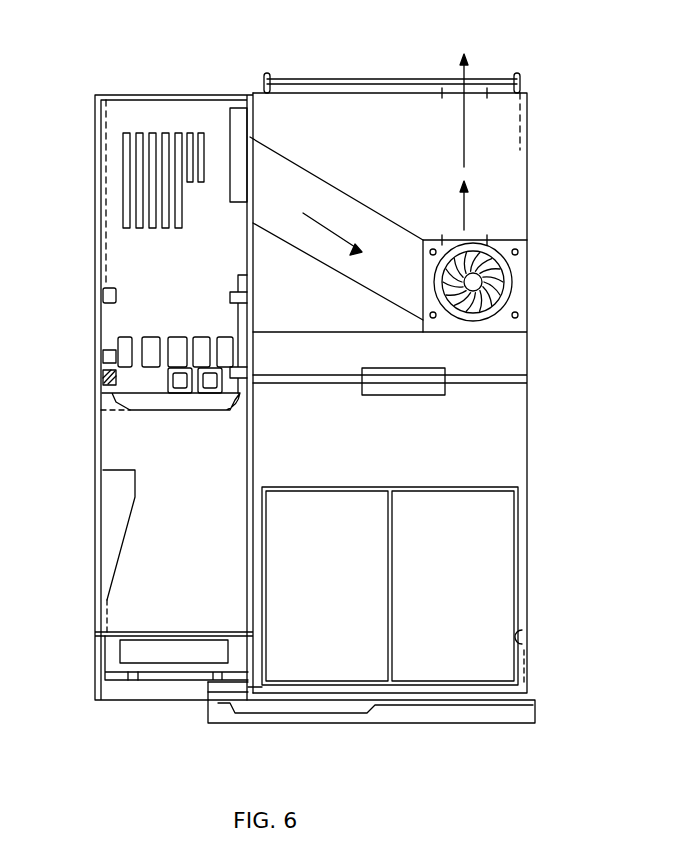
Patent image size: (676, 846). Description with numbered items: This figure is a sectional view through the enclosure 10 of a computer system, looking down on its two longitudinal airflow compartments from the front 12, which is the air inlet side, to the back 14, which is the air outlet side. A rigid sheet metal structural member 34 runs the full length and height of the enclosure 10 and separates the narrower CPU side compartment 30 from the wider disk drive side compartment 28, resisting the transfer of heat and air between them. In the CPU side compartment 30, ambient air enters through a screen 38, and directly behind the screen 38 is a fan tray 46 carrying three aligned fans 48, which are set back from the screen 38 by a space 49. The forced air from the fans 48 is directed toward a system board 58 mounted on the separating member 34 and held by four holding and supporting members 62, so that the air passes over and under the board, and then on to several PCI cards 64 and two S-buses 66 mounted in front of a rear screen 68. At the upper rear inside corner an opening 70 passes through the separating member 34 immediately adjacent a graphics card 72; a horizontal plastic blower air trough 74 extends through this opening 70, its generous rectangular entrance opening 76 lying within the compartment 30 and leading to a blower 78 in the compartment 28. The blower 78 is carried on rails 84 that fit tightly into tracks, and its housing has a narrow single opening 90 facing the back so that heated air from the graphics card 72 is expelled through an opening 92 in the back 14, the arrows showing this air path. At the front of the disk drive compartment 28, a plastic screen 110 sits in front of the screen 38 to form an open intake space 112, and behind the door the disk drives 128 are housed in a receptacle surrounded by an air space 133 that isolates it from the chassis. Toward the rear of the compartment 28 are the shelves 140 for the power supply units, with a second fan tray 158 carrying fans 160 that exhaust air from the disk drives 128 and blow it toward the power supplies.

The enclosure 10 is at (150, 86).
The front 12 is at (222, 723).
The back 14 is at (218, 93).
The compartment 28 is at (520, 447).
The compartment 30 is at (115, 450).
The structural member 34 is at (254, 433).
The screen 38 is at (188, 675).
The fan tray 46 is at (188, 632).
The fans 48 is at (168, 652).
The space 49 is at (130, 675).
The system board 58 is at (248, 447).
The holding and supporting members 62 is at (103, 297).
The PCI cards 64 is at (122, 162).
The S-buses 66 is at (190, 145).
The rear screen 68 is at (128, 96).
The opening 70 is at (252, 140).
The graphics card 72 is at (240, 110).
The blower air trough 74 is at (345, 232).
The entrance opening 76 is at (263, 170).
The blower 78 is at (500, 268).
The rails 84 is at (512, 305).
The opening 90 is at (468, 240).
The opening 92 is at (472, 95).
The plastic screen 110 is at (238, 693).
The open intake space 112 is at (248, 687).
The disk drives 128 is at (345, 591).
The air space 133 is at (524, 637).
The shelves 140 is at (436, 150).
The second fan tray 158 is at (470, 377).
The fans 160 is at (395, 375).